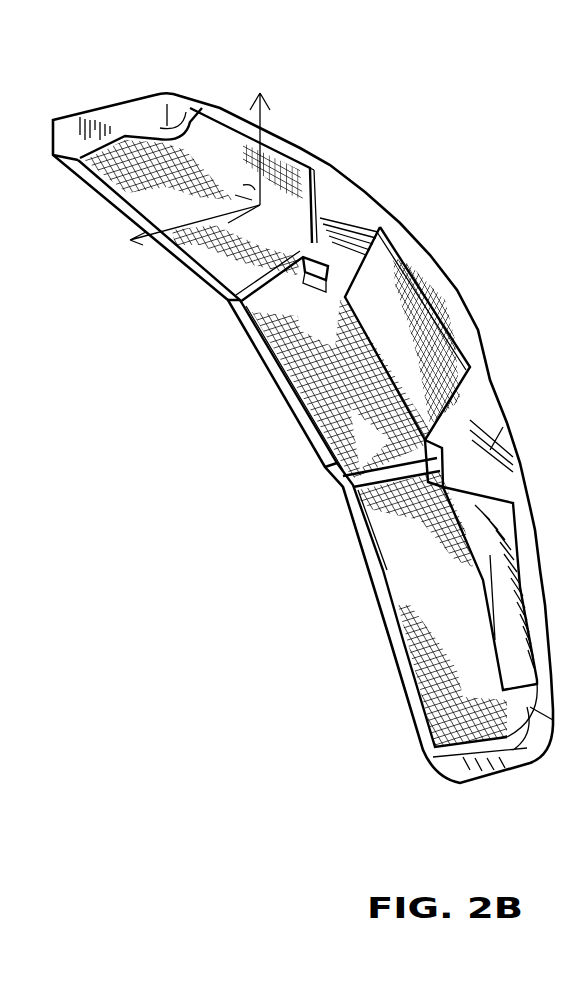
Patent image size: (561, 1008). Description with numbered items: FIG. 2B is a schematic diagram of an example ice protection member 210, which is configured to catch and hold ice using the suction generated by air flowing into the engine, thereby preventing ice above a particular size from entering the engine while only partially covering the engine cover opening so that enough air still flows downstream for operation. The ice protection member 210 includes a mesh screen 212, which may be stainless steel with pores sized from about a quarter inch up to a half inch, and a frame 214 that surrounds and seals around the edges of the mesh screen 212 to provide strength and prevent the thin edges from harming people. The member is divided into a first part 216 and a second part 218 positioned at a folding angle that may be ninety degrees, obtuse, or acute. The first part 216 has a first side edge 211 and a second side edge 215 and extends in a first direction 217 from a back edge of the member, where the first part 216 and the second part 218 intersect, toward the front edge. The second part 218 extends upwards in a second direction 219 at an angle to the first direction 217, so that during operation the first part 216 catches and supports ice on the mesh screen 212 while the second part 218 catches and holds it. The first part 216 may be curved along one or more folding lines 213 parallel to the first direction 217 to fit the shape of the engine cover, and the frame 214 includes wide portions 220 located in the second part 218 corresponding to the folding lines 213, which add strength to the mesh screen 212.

The ice protection member 210 is at (468, 126).
The first side edge 211 is at (290, 240).
The mesh screen 212 is at (258, 300).
The folding lines 213 is at (343, 480).
The frame 214 is at (383, 590).
The second side edge 215 is at (173, 279).
The first part 216 is at (305, 385).
The first direction 217 is at (167, 229).
The second part 218 is at (430, 325).
The second direction 219 is at (255, 143).
The wide portions 220 is at (363, 215).